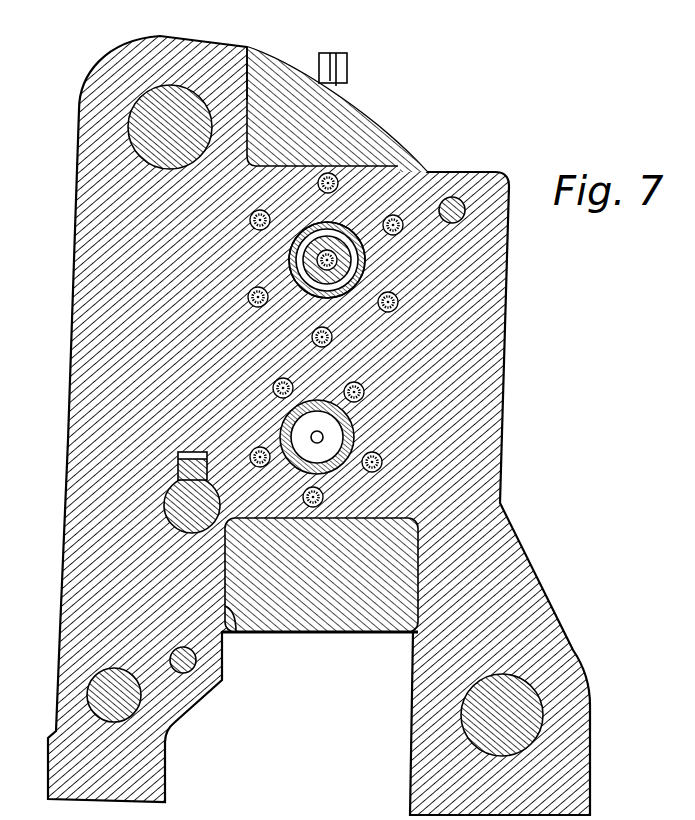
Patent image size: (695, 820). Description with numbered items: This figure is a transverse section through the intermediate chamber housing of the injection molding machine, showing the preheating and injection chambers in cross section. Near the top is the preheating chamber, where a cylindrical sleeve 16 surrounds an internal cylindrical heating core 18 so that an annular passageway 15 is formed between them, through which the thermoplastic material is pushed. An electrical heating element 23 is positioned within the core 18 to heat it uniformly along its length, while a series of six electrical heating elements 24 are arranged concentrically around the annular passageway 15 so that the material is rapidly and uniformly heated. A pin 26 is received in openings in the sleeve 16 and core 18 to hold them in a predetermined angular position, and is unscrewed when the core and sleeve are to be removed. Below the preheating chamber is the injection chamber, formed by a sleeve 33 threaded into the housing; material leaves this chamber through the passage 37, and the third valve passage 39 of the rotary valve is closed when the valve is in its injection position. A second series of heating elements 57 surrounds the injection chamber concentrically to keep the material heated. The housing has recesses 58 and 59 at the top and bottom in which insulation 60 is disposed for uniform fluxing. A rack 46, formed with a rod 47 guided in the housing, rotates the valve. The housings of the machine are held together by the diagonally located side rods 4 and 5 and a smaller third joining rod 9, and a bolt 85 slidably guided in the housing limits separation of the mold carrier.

The side rod 4 is at (140, 125).
The side rod 5 is at (530, 712).
The third joining rod 9 is at (95, 690).
The annular passageway 15 is at (345, 240).
The cylindrical sleeve 16 is at (365, 260).
The heating core 18 is at (340, 250).
The electrical heating element 23 is at (341, 226).
The electrical heating elements 24 is at (398, 216).
The pin 26 is at (340, 80).
The sleeve 33 is at (345, 445).
The passage 37 is at (330, 424).
The third valve passage 39 is at (326, 437).
The rack 46 is at (178, 458).
The rod 47 is at (170, 494).
The heating elements 57 is at (364, 392).
The recess 58 is at (251, 77).
The recess 59 is at (238, 628).
The insulation 60 is at (282, 85).
The bolt 85 is at (458, 200).